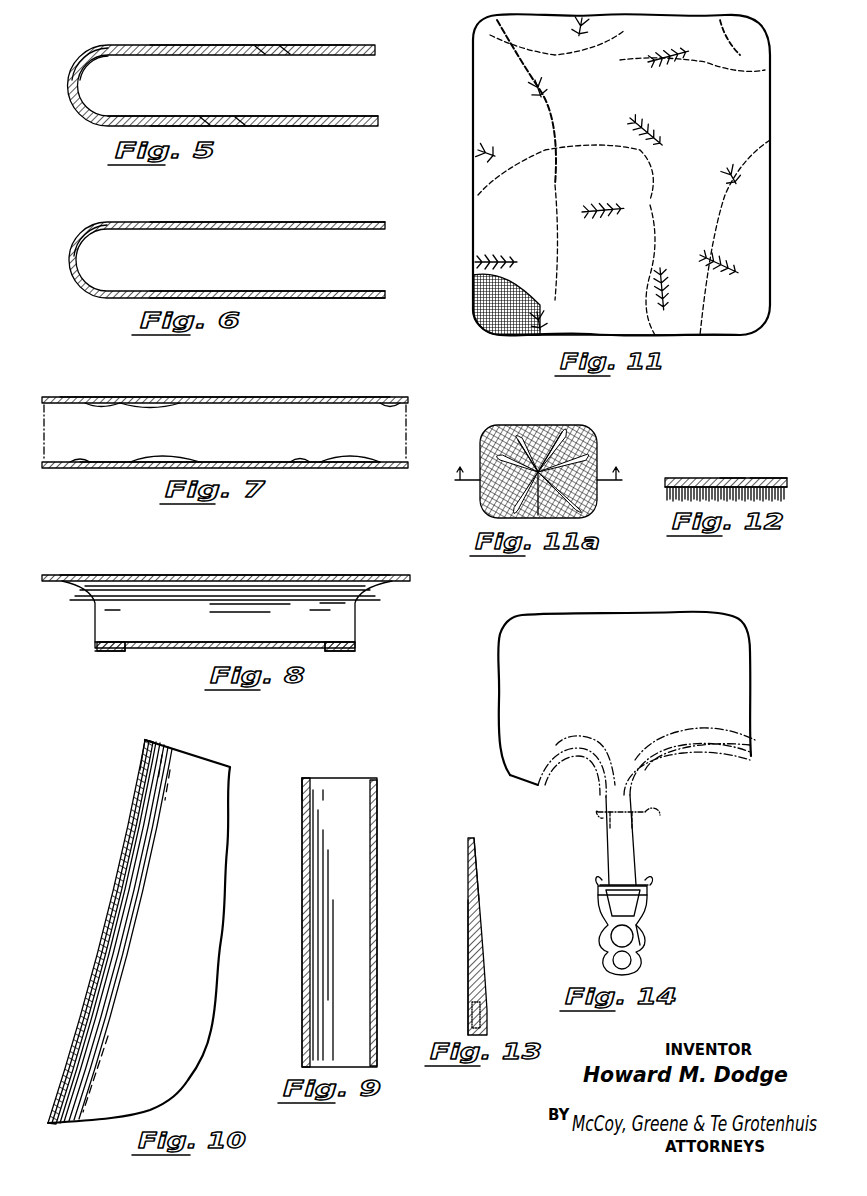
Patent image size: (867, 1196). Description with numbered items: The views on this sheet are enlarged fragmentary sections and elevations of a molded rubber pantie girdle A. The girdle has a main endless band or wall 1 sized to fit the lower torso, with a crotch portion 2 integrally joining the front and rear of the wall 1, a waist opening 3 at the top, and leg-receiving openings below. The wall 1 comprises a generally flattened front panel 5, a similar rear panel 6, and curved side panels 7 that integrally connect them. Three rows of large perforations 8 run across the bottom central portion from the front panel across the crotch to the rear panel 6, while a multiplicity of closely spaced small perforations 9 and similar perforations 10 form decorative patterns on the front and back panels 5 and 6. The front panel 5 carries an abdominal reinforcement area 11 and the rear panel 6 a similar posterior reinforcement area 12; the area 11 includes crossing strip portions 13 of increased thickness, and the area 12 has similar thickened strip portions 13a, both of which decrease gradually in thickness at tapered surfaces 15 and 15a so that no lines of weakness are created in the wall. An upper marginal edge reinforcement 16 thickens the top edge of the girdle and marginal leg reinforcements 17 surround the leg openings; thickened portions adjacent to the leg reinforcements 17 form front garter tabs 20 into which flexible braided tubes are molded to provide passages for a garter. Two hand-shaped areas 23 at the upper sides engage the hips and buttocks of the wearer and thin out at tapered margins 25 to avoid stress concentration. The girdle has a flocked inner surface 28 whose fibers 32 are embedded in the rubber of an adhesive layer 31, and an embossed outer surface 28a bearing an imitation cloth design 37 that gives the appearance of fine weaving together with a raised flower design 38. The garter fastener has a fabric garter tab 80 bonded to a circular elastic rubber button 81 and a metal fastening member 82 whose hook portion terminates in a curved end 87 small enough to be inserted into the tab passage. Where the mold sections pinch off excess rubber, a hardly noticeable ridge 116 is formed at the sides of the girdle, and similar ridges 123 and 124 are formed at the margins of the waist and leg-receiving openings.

In FIG. 11, the pantie girdle A is at (456, 107).
In FIG. 7, the main endless band or wall 1 is at (298, 397).
In FIG. 12, the main endless band or wall 1 is at (680, 478).
In FIG. 8, the crotch portion 2 is at (93, 608).
In FIG. 14, the crotch portion 2 is at (526, 775).
In FIG. 10, the waist opening 3 is at (205, 770).
In FIG. 9, the waist opening 3 is at (358, 785).
In FIG. 5, the front panel 5 is at (330, 116).
In FIG. 6, the front panel 5 is at (265, 298).
In FIG. 8, the front panel 5 is at (200, 648).
In FIG. 9, the front panel 5 is at (378, 960).
In FIG. 5, the rear panel 6 is at (350, 45).
In FIG. 6, the rear panel 6 is at (240, 222).
In FIG. 7, the rear panel 6 is at (205, 403).
In FIG. 8, the rear panel 6 is at (160, 575).
In FIG. 9, the rear panel 6 is at (302, 912).
In FIG. 13, the rear panel 6 is at (478, 872).
In FIG. 10, the curved side panels 7 is at (140, 830).
In FIG. 8, the large perforations 8 is at (155, 649).
In FIG. 6, the small perforations 9 is at (372, 291).
In FIG. 14, the small perforations 9 is at (660, 940).
In FIG. 6, the perforations 10 is at (375, 222).
In FIG. 7, the abdominal reinforcement area 11 is at (265, 449).
In FIG. 11A, the posterior reinforcement area 12 is at (535, 481).
In FIG. 7, the crossing strip portions 13 is at (205, 462).
In FIG. 7, the thickened strip portions 13a is at (85, 403).
In FIG. 7, the tapered surfaces 15 is at (75, 462).
In FIG. 7, the tapered surfaces 15a is at (120, 403).
In FIG. 10, the upper marginal edge reinforcement 16 is at (138, 760).
In FIG. 9, the upper marginal edge reinforcement 16 is at (302, 790).
In FIG. 8, the marginal leg reinforcements 17 is at (108, 651).
In FIG. 14, the front garter reinforcements or tabs 20 is at (610, 855).
In FIG. 5, the hand-shaped areas 23 is at (80, 88).
In FIG. 10, the hand-shaped areas 23 is at (85, 1024).
In FIG. 5, the tapered margins 25 is at (257, 45).
In FIG. 5, the flocked inner surface 28 is at (200, 117).
In FIG. 6, the flocked inner surface 28 is at (150, 229).
In FIG. 8, the flocked inner surface 28 is at (120, 642).
In FIG. 10, the flocked inner surface 28 is at (133, 868).
In FIG. 13, the flocked inner surface 28 is at (468, 942).
In FIG. 5, the embossed outer surface 28a is at (148, 45).
In FIG. 6, the embossed outer surface 28a is at (135, 222).
In FIG. 8, the embossed outer surface 28a is at (288, 575).
In FIG. 10, the embossed outer surface 28a is at (104, 916).
In FIG. 13, the embossed outer surface 28a is at (485, 942).
In FIG. 11, the embossed outer surface 28a is at (720, 318).
In FIG. 12, the adhesive layer 31 is at (785, 487).
In FIG. 12, the fibers 32 is at (670, 495).
In FIG. 11, the imitation cloth design 37 is at (475, 185).
In FIG. 11A, the imitation cloth design 37 is at (480, 440).
In FIG. 12, the imitation cloth design 37 is at (778, 478).
In FIG. 11, the raised flower design 38 is at (655, 68).
In FIG. 11A, the raised flower design 38 is at (565, 432).
In FIG. 12, the raised flower design 38 is at (725, 478).
In FIG. 14, the fabric garter tab 80 is at (640, 903).
In FIG. 14, the circular elastic rubber button 81 is at (613, 960).
In FIG. 14, the metal fastening member 82 is at (600, 912).
In FIG. 14, the curved end 87 is at (640, 812).
In FIG. 5, the ridge 116 is at (68, 84).
In FIG. 6, the ridge 116 is at (70, 258).
In FIG. 10, the ridge 123 is at (147, 739).
In FIG. 9, the ridge 123 is at (308, 778).
In FIG. 8, the ridge 124 is at (95, 648).